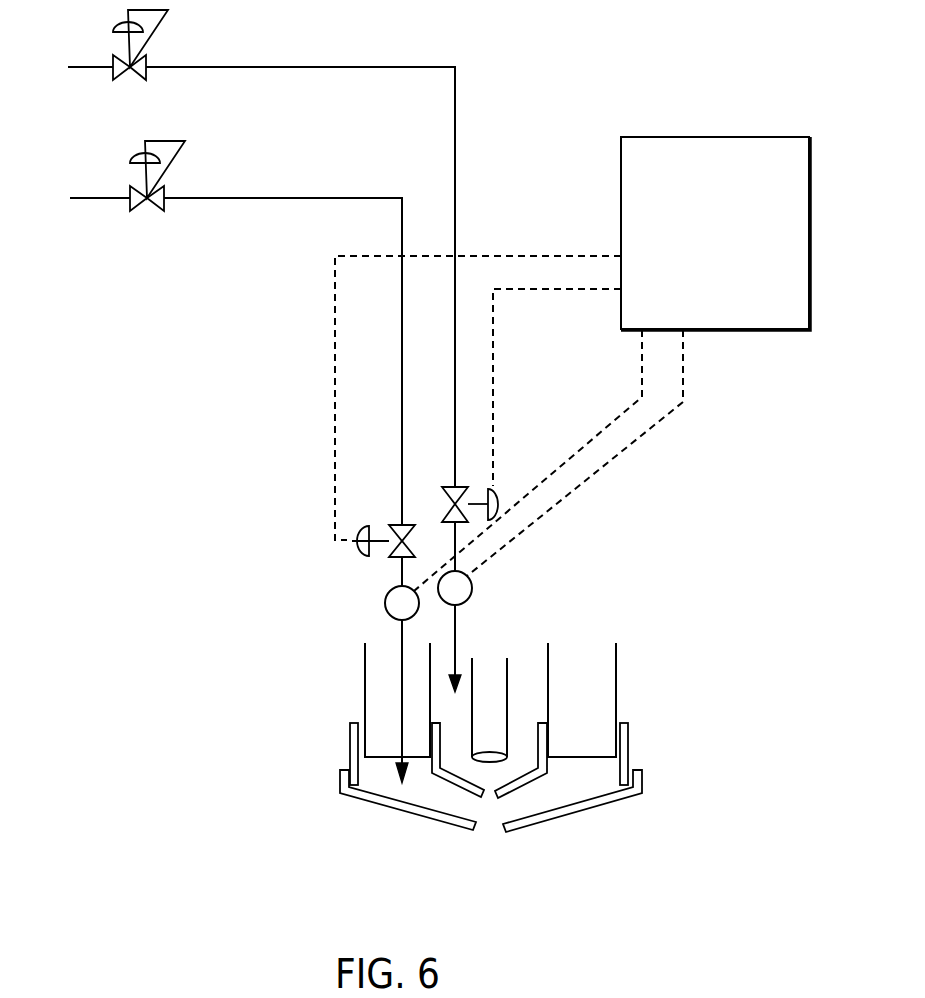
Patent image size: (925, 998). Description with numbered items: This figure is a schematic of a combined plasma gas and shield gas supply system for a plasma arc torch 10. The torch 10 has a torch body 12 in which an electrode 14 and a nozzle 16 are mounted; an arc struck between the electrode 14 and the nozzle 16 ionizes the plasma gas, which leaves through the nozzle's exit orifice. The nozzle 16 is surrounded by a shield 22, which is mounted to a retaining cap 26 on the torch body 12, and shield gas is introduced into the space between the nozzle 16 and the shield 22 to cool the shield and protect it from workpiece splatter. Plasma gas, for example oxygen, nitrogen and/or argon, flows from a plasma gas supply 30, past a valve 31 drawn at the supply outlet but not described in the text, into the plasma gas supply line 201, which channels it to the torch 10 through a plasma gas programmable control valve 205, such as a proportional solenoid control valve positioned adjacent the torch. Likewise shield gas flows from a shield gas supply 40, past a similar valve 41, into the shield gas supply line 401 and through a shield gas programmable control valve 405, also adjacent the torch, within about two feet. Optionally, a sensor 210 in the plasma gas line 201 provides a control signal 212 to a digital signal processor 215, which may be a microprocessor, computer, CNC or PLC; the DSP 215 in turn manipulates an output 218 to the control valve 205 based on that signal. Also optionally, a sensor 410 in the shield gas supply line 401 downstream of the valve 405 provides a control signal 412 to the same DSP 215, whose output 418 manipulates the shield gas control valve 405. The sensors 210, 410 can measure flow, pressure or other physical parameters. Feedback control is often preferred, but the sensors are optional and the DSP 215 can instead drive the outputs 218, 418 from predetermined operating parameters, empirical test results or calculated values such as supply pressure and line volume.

The plasma torch 10 is at (741, 587).
The torch body 12 is at (572, 714).
The electrode 14 is at (477, 714).
The nozzle 16 is at (547, 776).
The shield 22 is at (582, 816).
The retaining cap 26 is at (633, 741).
The plasma gas supply 30 is at (76, 68).
The first control valve 31 is at (134, 62).
The shield gas supply 40 is at (86, 199).
The second control valve 41 is at (151, 193).
The plasma gas supply line 201 is at (297, 63).
The plasma gas programmable control valve 205 is at (497, 498).
The sensor 210 is at (469, 595).
The control signal 212 is at (602, 469).
The digital signal processor 215 is at (734, 239).
The output 218 is at (546, 291).
The shield gas supply line 401 is at (297, 194).
The shield gas programmable control valve 405 is at (377, 533).
The sensor 410 is at (389, 591).
The control signal 412 is at (584, 444).
The output 418 is at (521, 255).